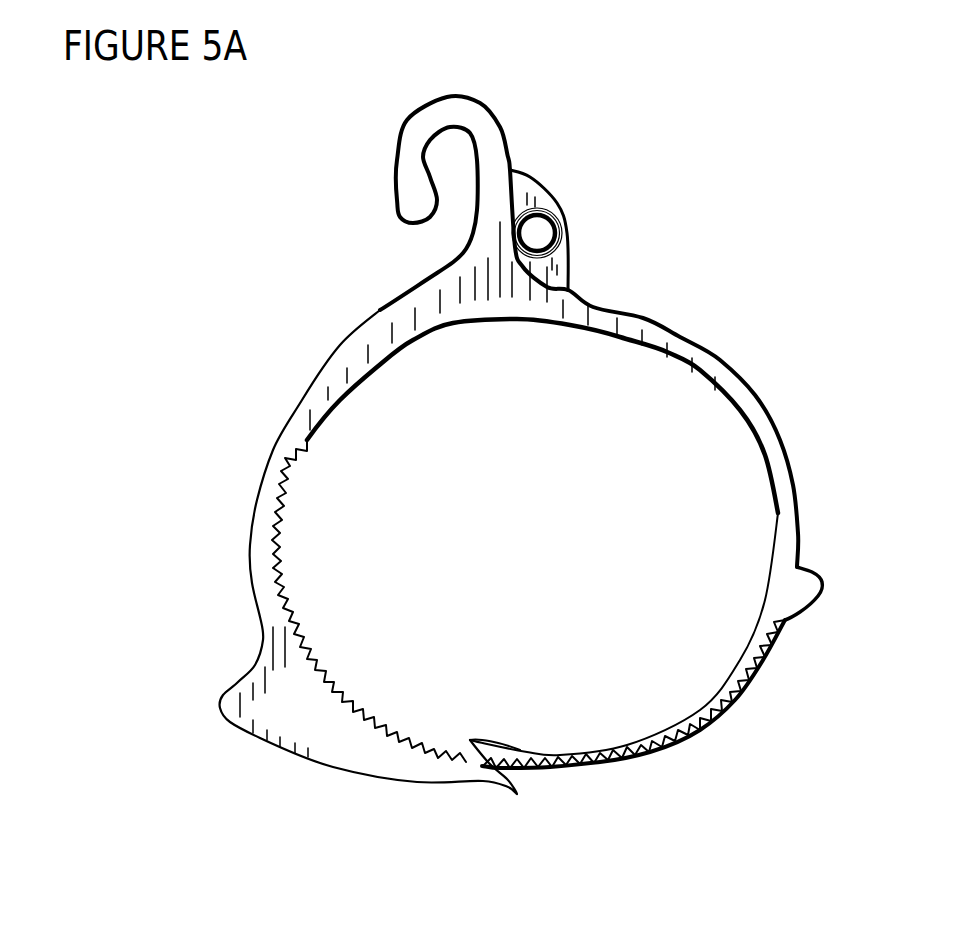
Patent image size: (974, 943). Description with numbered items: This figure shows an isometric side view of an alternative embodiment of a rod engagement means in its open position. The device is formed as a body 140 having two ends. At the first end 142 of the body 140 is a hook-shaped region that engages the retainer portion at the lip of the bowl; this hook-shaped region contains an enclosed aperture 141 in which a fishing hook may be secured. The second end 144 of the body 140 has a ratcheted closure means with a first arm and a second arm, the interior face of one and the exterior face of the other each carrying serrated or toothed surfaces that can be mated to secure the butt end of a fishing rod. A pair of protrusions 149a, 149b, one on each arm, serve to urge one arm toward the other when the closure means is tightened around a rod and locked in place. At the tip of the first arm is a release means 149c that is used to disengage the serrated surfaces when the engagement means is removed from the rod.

The body 140 is at (240, 406).
The enclosed aperture 141 is at (537, 233).
The first end 142 is at (520, 117).
The second end 144 is at (842, 505).
The protrusion 149a is at (808, 597).
The protrusion 149b is at (277, 713).
The release means 149c is at (497, 780).